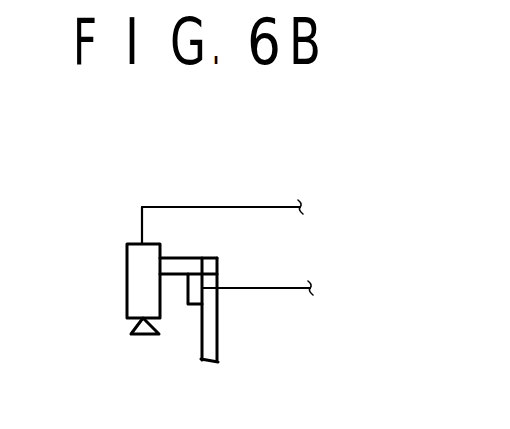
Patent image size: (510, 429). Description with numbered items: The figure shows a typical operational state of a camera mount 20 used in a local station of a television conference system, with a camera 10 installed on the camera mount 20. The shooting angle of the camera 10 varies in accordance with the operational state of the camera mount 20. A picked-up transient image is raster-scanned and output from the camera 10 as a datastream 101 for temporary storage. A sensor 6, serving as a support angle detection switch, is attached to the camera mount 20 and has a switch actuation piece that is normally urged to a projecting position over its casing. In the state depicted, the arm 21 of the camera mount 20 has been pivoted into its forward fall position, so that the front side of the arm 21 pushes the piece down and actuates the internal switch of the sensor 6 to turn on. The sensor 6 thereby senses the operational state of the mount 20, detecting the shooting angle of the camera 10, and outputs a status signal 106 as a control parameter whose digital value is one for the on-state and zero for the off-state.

The sensor 6 is at (190, 305).
The camera 10 is at (127, 283).
The camera mount 20 is at (200, 335).
The arm 21 is at (179, 258).
The datastream 101 is at (253, 207).
The status signal 106 is at (275, 288).